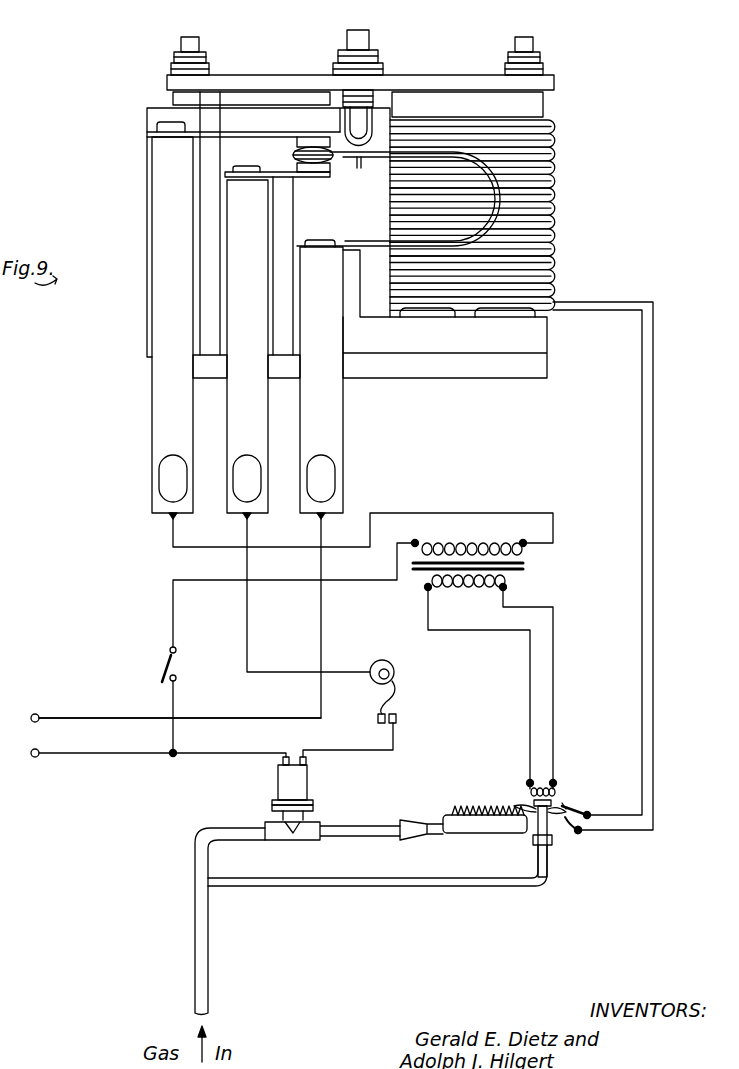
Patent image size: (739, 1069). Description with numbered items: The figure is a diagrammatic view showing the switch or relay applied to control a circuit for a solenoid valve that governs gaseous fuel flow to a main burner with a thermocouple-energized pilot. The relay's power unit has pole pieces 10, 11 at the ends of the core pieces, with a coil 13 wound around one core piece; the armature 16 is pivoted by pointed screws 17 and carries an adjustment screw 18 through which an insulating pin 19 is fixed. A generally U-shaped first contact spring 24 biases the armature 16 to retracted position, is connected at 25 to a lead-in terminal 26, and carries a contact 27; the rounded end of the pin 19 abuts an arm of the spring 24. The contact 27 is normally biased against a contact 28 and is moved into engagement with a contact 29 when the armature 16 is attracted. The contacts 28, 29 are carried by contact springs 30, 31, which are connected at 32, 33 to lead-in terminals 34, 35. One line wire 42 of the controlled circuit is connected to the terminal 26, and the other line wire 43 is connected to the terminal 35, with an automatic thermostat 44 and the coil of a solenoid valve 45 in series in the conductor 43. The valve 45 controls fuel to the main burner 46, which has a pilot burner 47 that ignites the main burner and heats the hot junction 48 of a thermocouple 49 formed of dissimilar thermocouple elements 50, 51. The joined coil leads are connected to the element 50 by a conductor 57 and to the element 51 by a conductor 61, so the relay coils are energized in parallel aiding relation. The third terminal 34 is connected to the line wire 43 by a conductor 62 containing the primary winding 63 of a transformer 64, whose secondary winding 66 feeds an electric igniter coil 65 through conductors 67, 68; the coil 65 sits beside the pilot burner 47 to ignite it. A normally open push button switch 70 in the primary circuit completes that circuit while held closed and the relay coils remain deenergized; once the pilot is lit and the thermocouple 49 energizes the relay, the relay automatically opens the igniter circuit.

The pole piece 10 is at (245, 97).
The pole piece 11 is at (440, 100).
The coil 13 is at (535, 192).
The armature 16 is at (262, 80).
The pointed screws 17 is at (175, 57).
The adjustment screw 18 is at (366, 85).
The insulating pin 19 is at (372, 125).
The first contact spring 24 is at (495, 172).
The connection of spring 24 25 is at (330, 246).
The lead-in terminal 26 is at (330, 412).
The contact 27 is at (318, 163).
The contact 28 is at (310, 137).
The contact 29 is at (330, 168).
The contact spring 30 is at (243, 132).
The contact spring 31 is at (282, 177).
The connection of spring 30 32 is at (162, 128).
The connection of spring 31 33 is at (230, 172).
The lead-in terminal 34 is at (175, 320).
The lead-in terminal 35 is at (237, 418).
The line wire 42 is at (102, 718).
The line wire 43 is at (120, 755).
The automatic thermostat 44 is at (396, 688).
The solenoid valve 45 is at (272, 782).
The main burner 46 is at (470, 832).
The pilot burner 47 is at (549, 832).
The hot junction 48 is at (568, 806).
The thermocouple 49 is at (584, 832).
The thermocouple element 50 is at (582, 817).
The thermocouple element 51 is at (571, 822).
The conductor 57 is at (588, 312).
The conductor 61 is at (625, 302).
The conductor 62 is at (172, 528).
The primary winding 63 is at (432, 538).
The transformer 64 is at (532, 566).
The electric igniter coil 65 is at (537, 785).
The secondary winding 66 is at (452, 594).
The conductor 67 is at (528, 680).
The conductor 68 is at (553, 653).
The push button switch 70 is at (162, 662).